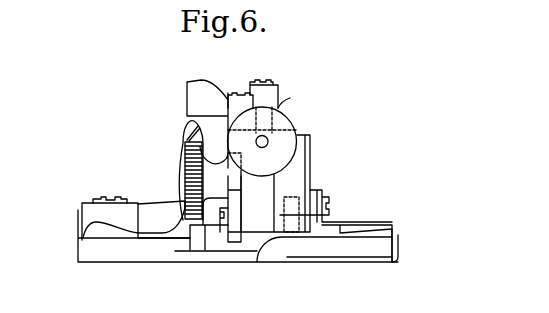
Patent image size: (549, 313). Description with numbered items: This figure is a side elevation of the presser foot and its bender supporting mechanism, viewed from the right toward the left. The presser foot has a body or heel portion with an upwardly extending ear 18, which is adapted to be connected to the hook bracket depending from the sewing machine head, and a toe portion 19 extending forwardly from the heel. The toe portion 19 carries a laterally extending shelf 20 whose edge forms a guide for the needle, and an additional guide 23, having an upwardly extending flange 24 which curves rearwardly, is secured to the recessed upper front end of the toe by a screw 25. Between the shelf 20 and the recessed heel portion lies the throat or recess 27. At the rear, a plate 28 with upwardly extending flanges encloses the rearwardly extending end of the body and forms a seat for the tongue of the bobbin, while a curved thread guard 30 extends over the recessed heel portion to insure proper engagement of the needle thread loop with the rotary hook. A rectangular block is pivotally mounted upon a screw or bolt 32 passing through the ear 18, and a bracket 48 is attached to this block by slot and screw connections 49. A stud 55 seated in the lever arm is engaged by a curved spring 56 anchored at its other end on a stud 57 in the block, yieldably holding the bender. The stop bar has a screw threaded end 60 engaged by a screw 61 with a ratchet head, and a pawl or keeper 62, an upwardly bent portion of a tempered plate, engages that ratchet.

The ear 18 is at (305, 145).
The toe portion 19 is at (162, 207).
The laterally extending shelf 20 is at (155, 250).
The additional guide 23 is at (88, 215).
The upwardly extending flange 24 is at (98, 235).
The screw 25 is at (115, 194).
The throat or recess 27 is at (253, 257).
The plate 28 is at (398, 234).
The curved thread guard 30 is at (325, 192).
The screw or bolt 32 is at (183, 163).
The bracket 48 is at (233, 241).
The slot and screw connections 49 is at (220, 235).
The stud 55 is at (272, 81).
The curved spring 56 is at (217, 85).
The stud 57 is at (237, 95).
The screw threaded end 60 is at (266, 140).
The screw 61 is at (298, 107).
The pawl or keeper 62 is at (279, 96).